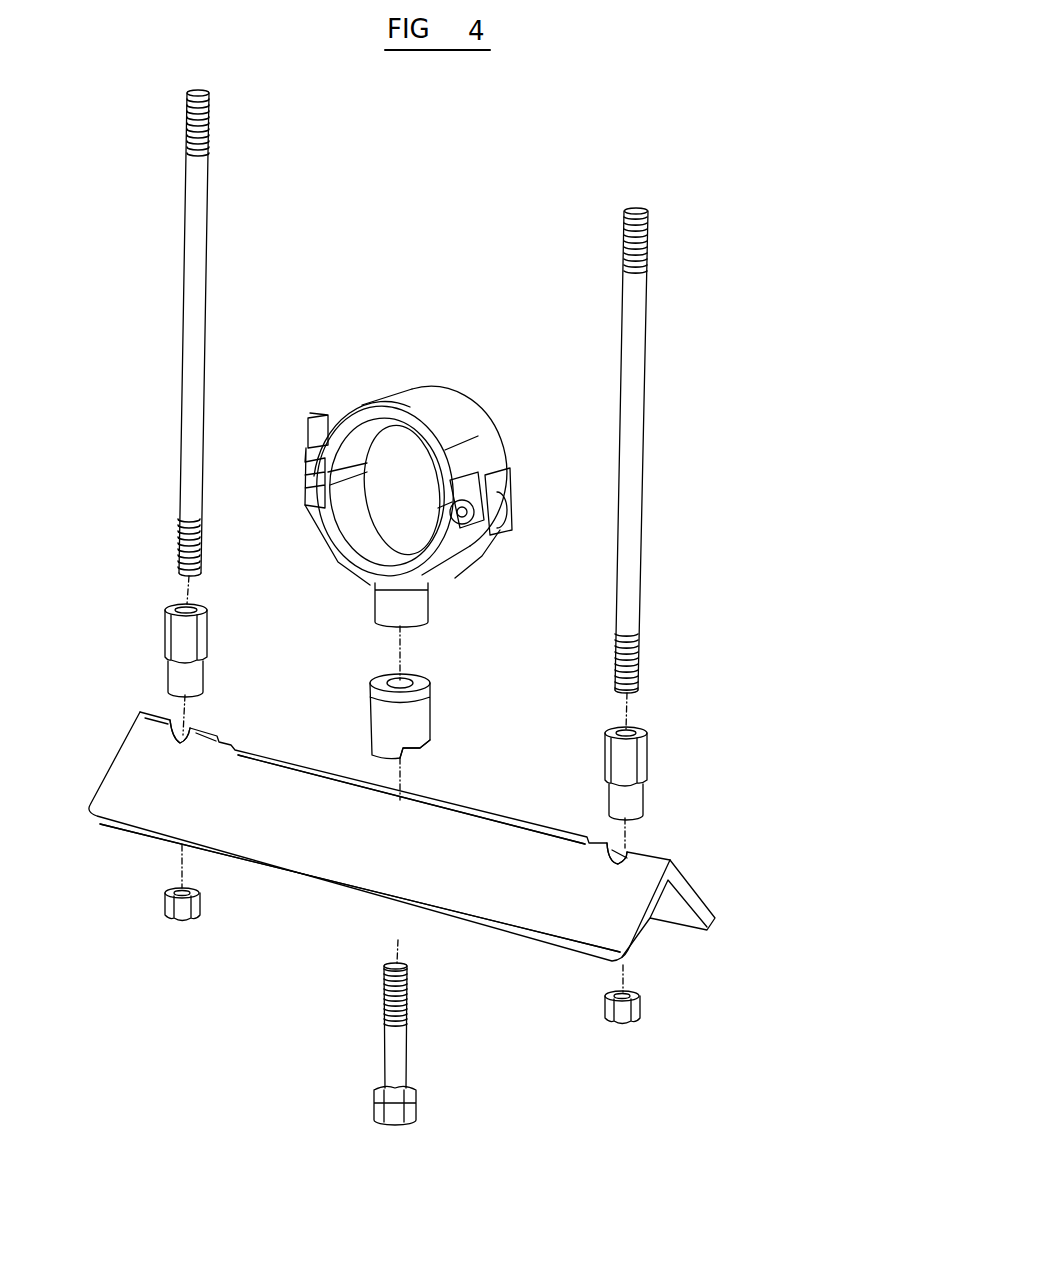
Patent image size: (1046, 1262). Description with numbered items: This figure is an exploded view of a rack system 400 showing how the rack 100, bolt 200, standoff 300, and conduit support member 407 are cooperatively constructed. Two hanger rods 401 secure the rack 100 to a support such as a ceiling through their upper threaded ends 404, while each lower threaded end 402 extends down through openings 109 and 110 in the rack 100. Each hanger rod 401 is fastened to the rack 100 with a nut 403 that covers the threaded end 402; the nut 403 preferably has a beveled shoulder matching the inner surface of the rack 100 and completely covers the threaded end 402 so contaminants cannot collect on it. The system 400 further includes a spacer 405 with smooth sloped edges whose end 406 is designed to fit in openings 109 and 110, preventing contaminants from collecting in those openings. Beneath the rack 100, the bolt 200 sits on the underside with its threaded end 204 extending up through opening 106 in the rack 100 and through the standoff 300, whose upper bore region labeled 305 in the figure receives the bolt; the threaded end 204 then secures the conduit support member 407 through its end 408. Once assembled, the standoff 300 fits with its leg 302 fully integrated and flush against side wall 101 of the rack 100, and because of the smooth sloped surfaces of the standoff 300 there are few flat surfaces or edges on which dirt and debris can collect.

The rack system 400 is at (675, 500).
The hanger rod 401 is at (190, 318).
The threaded end 402 is at (180, 538).
The nut 403 is at (163, 910).
The threaded end 404 is at (188, 132).
The spacer 405 is at (170, 632).
The end 406 is at (172, 675).
The conduit support member 407 is at (445, 430).
The end 408 is at (420, 607).
The rack 100 is at (391, 864).
The side wall 101 is at (270, 835).
The opening 106 is at (478, 808).
The opening 109 is at (633, 850).
The opening 110 is at (180, 727).
The bolt 200 is at (418, 1043).
The threaded end 204 is at (410, 977).
The standoff 300 is at (438, 712).
The leg 302 is at (372, 748).
The spacer bore 305 is at (403, 676).